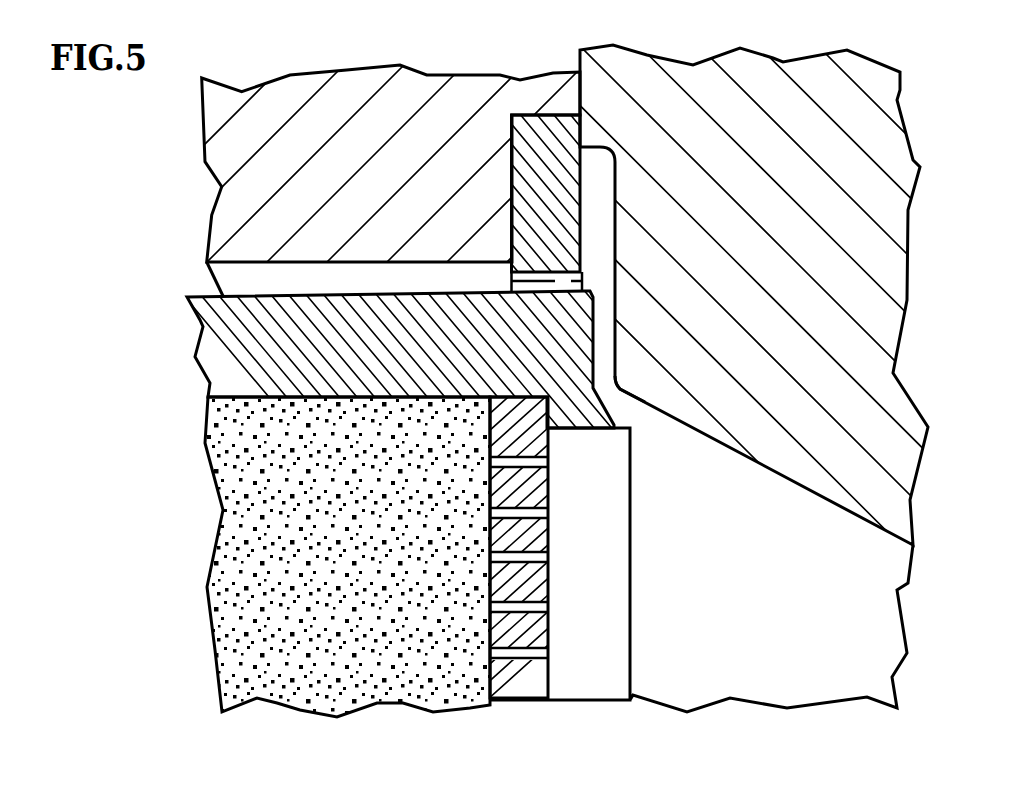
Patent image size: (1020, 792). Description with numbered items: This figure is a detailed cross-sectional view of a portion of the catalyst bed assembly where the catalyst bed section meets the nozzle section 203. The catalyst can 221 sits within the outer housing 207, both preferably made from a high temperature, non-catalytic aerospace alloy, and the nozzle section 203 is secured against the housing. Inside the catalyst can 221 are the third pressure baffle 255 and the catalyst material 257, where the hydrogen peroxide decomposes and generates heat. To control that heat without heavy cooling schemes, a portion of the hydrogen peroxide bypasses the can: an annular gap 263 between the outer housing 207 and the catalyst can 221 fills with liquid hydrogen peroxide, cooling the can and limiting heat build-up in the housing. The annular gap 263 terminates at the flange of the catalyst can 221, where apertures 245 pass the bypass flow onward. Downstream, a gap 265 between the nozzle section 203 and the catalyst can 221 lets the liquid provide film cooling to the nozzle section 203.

The nozzle section 203 is at (813, 72).
The outer housing 207 is at (388, 93).
The catalyst can 221 is at (371, 355).
The apertures 245 is at (585, 281).
The third pressure baffle 255 is at (533, 682).
The catalyst material 257 is at (363, 693).
The annular gap 263 is at (337, 284).
The gap 265 is at (630, 415).